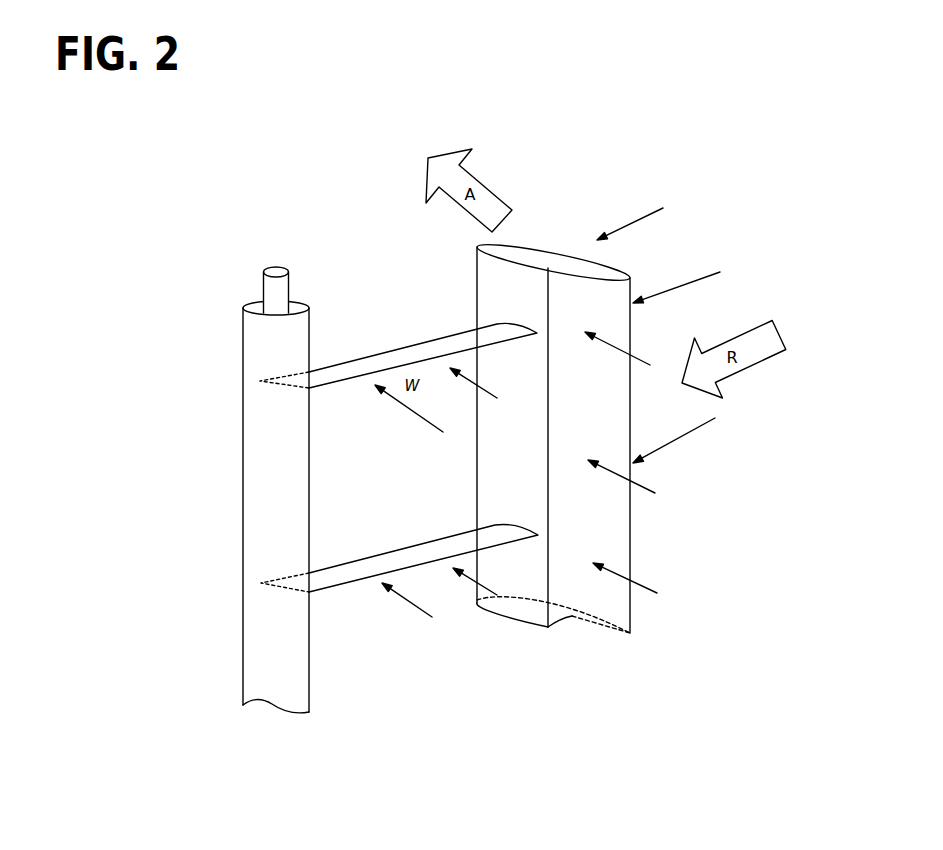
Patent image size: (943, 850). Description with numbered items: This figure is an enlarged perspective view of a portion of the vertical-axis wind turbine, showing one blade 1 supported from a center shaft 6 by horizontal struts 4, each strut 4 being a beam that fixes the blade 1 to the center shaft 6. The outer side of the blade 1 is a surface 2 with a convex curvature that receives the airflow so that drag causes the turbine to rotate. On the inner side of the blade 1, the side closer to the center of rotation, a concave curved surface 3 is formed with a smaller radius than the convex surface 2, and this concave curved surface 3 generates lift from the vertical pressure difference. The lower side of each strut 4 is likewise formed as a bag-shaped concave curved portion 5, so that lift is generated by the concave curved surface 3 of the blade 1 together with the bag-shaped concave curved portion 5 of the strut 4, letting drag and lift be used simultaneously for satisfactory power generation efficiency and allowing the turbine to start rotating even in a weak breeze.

The blade 1 is at (503, 293).
The surface 2 is at (535, 240).
The concave curved surface 3 is at (587, 292).
The strut (horizontal arm) 4 is at (407, 555).
The bag-shaped concave curved portion 5 is at (285, 397).
The center shaft 6 is at (292, 337).